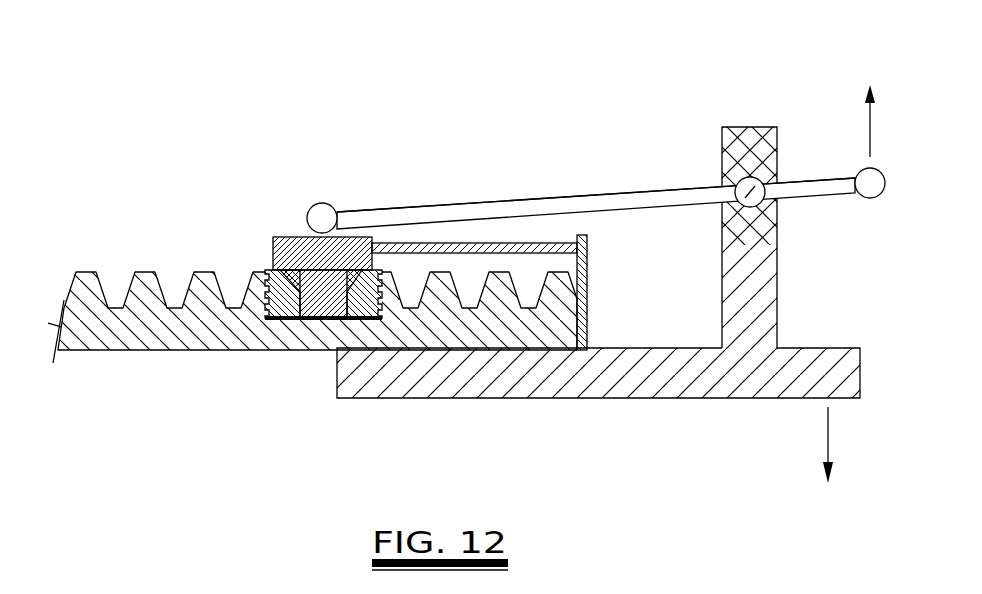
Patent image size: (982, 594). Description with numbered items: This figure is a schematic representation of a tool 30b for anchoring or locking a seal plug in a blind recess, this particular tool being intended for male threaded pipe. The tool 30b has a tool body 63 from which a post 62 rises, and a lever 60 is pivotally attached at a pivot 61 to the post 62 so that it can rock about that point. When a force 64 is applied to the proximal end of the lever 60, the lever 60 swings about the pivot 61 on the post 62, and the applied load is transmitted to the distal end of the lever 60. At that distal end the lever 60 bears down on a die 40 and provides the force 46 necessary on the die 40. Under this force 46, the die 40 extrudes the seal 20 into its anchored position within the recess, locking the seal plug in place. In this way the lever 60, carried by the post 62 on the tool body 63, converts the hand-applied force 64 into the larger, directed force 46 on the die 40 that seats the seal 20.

The seal 20 is at (290, 303).
The tool 30b is at (514, 178).
The die 40 is at (292, 258).
The force 46 is at (320, 184).
The lever 60 is at (657, 198).
The pivot 61 is at (761, 182).
The post 62 is at (757, 286).
The tool body 63 is at (655, 377).
The force 64 is at (869, 130).